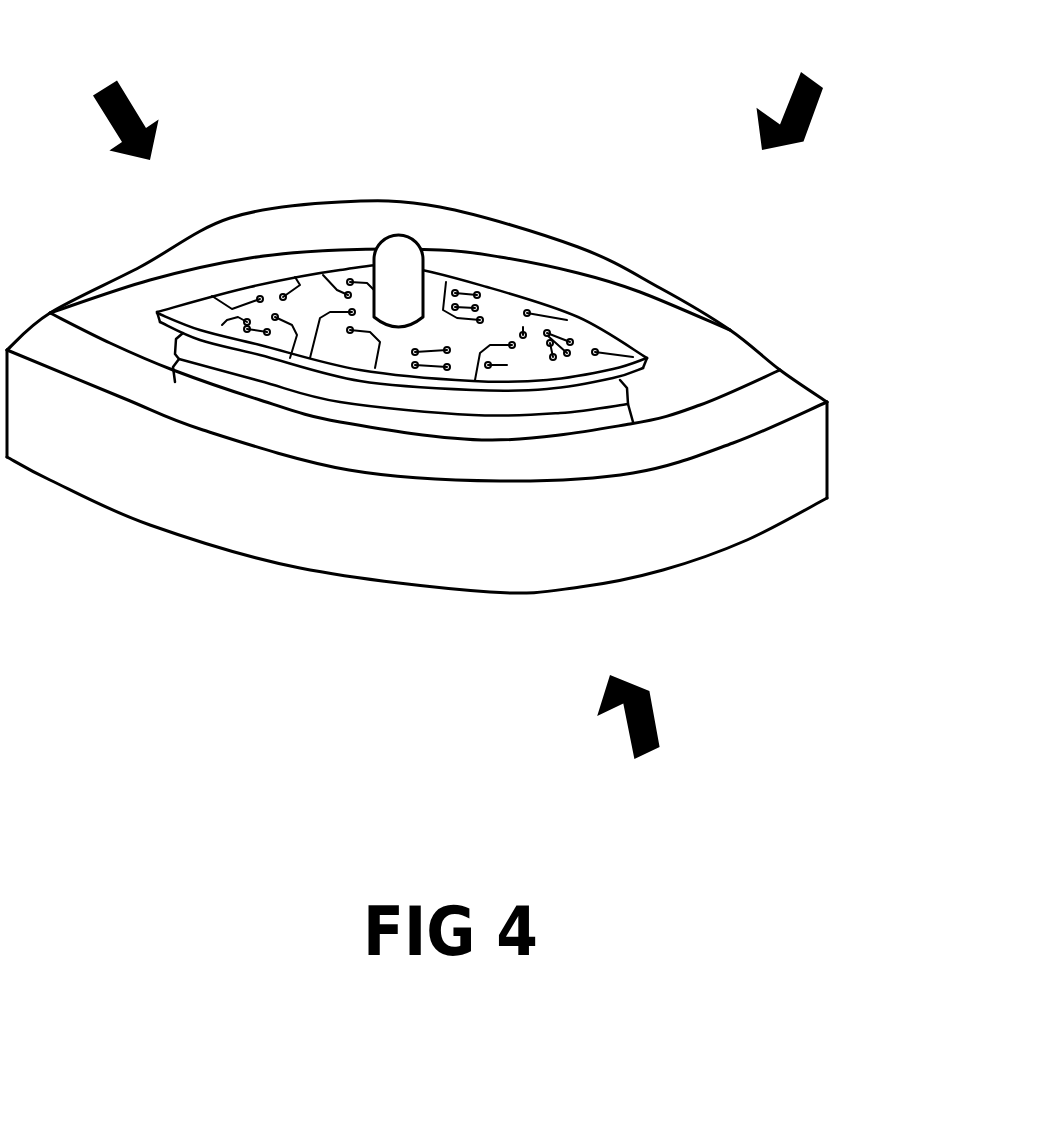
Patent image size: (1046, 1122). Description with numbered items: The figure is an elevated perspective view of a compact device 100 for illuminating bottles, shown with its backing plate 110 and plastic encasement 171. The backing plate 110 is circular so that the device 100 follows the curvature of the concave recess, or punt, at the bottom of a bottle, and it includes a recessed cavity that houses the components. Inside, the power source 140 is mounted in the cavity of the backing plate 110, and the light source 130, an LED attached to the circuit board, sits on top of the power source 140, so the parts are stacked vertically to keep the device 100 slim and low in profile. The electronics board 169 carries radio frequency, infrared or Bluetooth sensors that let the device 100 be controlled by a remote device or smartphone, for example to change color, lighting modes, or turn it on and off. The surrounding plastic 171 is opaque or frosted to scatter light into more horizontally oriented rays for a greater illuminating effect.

The device 100 is at (456, 422).
The backing plate 110 is at (803, 513).
The light source 130 is at (418, 240).
The power source 140 is at (632, 392).
The electronics board 169 is at (597, 325).
The plastic encasement 171 is at (300, 205).